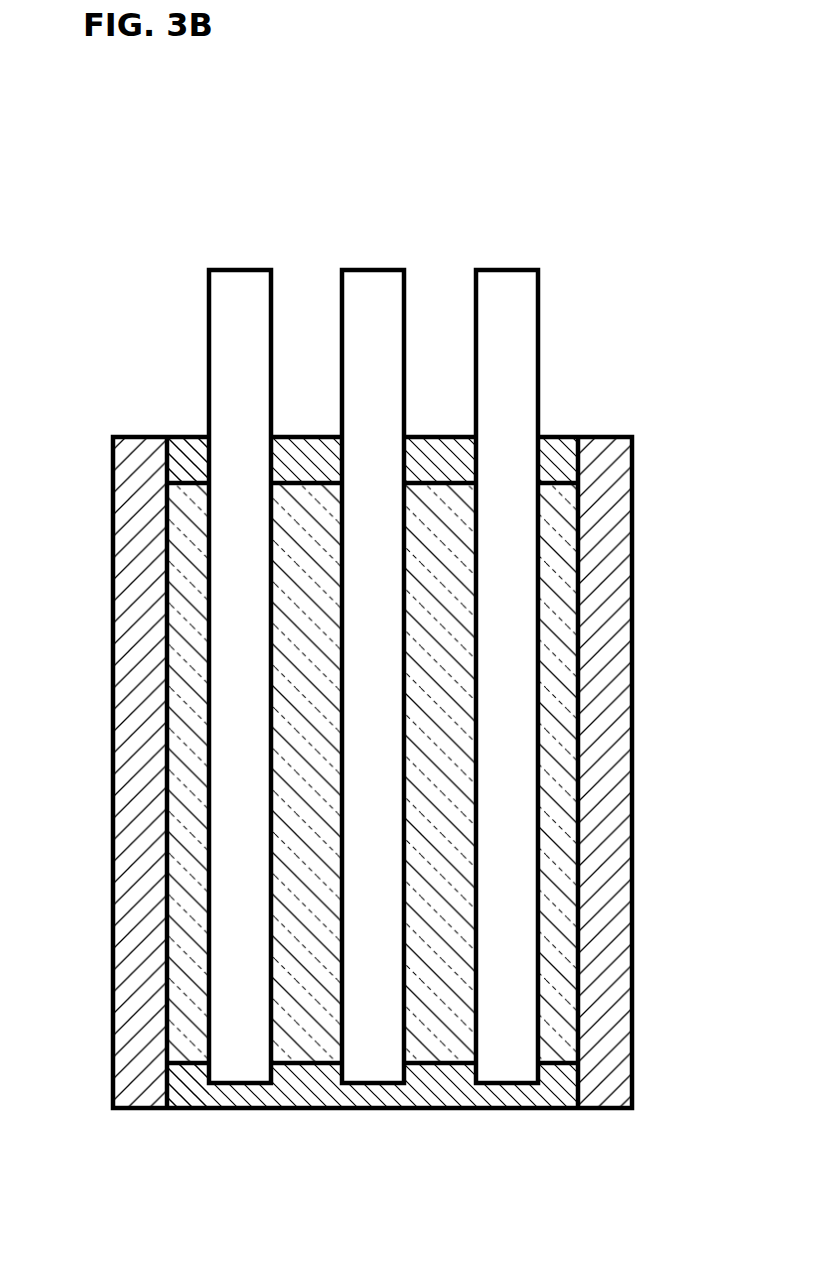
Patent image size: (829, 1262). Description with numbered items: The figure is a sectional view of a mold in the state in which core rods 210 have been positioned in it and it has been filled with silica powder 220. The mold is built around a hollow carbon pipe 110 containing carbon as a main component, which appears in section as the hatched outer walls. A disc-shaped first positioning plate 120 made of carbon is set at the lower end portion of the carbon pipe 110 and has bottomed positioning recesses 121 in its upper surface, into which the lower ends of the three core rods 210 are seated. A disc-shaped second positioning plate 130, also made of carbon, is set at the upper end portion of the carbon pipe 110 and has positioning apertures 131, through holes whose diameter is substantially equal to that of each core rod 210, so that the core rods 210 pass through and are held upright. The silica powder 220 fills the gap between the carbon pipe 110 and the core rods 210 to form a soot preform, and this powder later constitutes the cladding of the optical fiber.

The carbon pipe 110 is at (617, 763).
The first positioning plate 120 is at (562, 1085).
The positioning recesses 121 is at (208, 1076).
The second positioning plate 130 is at (551, 445).
The positioning apertures 131 is at (210, 452).
The core rods 210 is at (240, 268).
The silica powder 220 is at (552, 560).